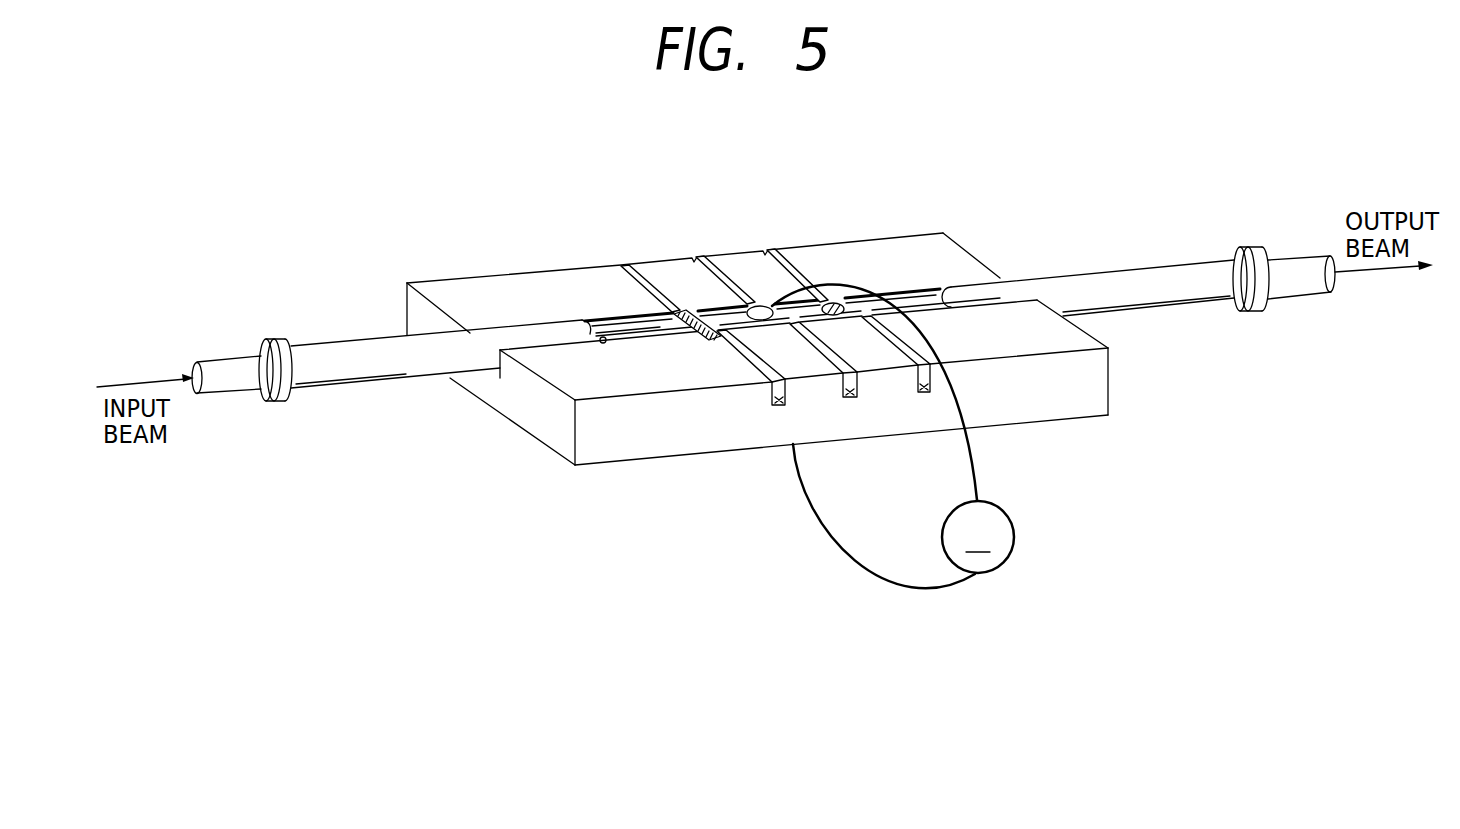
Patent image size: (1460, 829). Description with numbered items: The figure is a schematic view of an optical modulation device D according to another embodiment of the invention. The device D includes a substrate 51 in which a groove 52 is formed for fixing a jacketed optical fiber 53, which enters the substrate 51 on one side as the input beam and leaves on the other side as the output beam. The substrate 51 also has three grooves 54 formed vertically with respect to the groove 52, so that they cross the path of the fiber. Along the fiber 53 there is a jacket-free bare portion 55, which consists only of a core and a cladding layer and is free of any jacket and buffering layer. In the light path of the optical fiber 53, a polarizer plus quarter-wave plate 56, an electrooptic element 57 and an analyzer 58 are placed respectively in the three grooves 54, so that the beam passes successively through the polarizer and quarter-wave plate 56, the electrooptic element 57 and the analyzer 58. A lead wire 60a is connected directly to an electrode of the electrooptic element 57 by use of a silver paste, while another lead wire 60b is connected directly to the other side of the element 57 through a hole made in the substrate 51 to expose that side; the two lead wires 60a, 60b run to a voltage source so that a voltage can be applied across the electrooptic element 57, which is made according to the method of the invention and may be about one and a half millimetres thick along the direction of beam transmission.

The substrate 51 is at (641, 438).
The groove 52 is at (604, 343).
The jacketed optical fiber 53 is at (355, 350).
The grooves 54 is at (777, 406).
The bare portion 55 is at (627, 327).
The polarizer + λ/4 plate 56 is at (688, 310).
The electrooptic element 57 is at (760, 305).
The analyzer 58 is at (833, 297).
The lead wire 60a is at (978, 452).
The lead wire 60b is at (872, 565).
The optical modulation device D is at (437, 588).